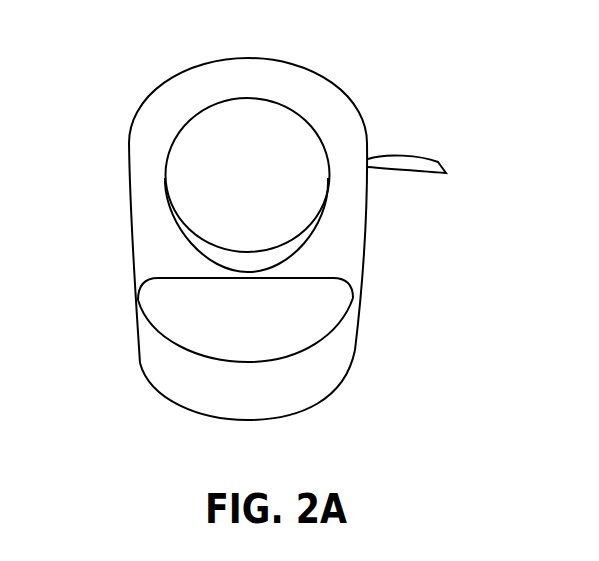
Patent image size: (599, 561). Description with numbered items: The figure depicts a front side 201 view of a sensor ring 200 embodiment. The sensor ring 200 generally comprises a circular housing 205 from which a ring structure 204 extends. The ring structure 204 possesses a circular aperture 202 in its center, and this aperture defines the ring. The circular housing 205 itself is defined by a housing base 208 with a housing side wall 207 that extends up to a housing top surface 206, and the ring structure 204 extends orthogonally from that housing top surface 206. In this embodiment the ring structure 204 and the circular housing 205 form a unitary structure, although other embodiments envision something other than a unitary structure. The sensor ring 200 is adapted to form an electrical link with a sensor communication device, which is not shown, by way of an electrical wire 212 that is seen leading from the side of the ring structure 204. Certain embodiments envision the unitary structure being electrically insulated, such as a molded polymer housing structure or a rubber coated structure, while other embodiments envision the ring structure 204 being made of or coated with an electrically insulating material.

The sensor ring 200 is at (229, 28).
The front side 201 is at (242, 330).
The circular aperture 202 is at (167, 183).
The ring structure 204 is at (327, 77).
The circular housing 205 is at (160, 367).
The housing top surface 206 is at (268, 328).
The housing side wall 207 is at (353, 347).
The housing base 208 is at (303, 410).
The electrical wire 212 is at (388, 155).